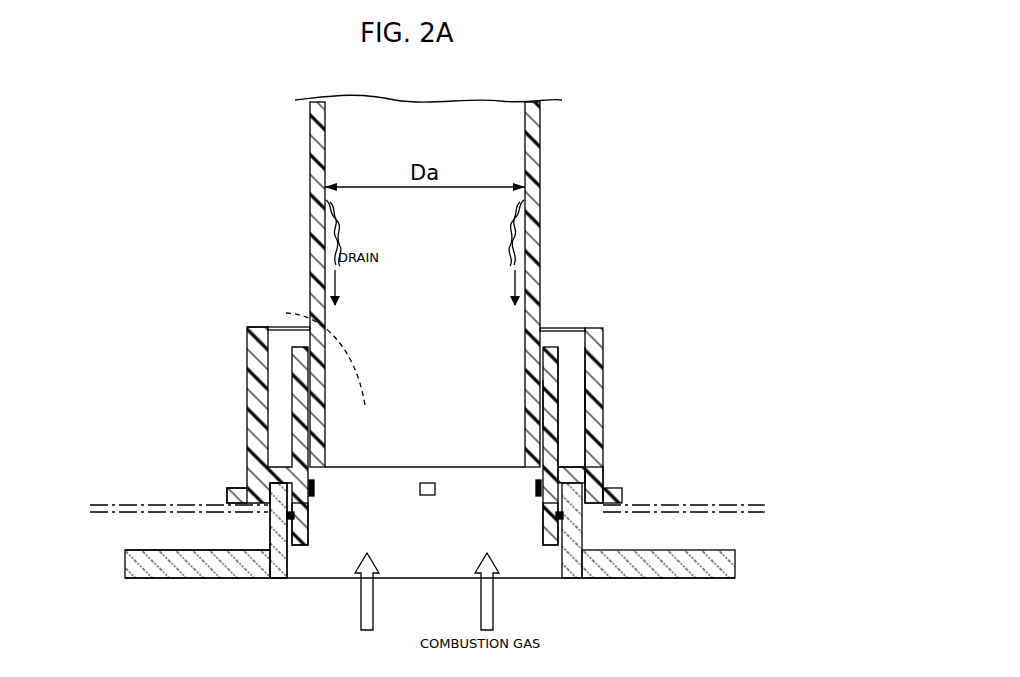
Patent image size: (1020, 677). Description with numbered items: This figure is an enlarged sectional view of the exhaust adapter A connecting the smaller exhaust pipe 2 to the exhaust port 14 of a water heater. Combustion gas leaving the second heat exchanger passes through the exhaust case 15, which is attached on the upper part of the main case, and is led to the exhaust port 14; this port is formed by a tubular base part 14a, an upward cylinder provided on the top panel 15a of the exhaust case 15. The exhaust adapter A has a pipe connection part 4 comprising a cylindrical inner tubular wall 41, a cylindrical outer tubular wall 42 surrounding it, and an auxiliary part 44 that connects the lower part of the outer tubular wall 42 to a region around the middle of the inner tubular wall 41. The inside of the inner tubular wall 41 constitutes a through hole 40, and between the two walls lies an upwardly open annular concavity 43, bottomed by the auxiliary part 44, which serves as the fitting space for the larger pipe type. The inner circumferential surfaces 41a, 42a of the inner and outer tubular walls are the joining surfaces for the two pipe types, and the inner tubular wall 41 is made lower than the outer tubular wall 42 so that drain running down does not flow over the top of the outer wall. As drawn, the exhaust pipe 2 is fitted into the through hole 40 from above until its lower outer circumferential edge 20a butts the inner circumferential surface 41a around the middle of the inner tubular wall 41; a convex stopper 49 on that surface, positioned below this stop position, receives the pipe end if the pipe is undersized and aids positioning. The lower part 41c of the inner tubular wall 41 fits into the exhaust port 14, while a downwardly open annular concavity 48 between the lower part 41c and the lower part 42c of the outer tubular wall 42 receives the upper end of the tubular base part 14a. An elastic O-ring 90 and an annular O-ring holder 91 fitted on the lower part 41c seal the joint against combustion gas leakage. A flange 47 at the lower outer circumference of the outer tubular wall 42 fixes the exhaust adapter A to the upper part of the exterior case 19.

The exhaust pipe 2 is at (537, 140).
The pipe connection part 4 is at (290, 303).
The exhaust adapter A is at (247, 325).
The through hole 40 is at (311, 353).
The inner tubular wall 41 is at (551, 345).
The inner circumferential surface of inner tubular wall 41a is at (543, 404).
The lower part of inner tubular wall 41c is at (549, 548).
The outer tubular wall 42 is at (604, 346).
The inner circumferential surface of outer tubular wall 42a is at (598, 393).
The lower part of outer tubular wall 42c is at (593, 488).
The annular concavity 43 is at (573, 382).
The auxiliary part 44 is at (578, 478).
The flange 47 is at (237, 489).
The annular concavity 48 is at (608, 490).
The convex stopper 49 is at (428, 497).
The exhaust port 14 is at (421, 568).
The tubular base part 14a is at (272, 530).
The exhaust case 15 is at (148, 553).
The top panel 15a is at (216, 554).
The exterior case 19 is at (752, 497).
The lower outer circumferential edge 20a is at (315, 490).
The O-ring 90 is at (296, 516).
The O-ring holder 91 is at (297, 535).